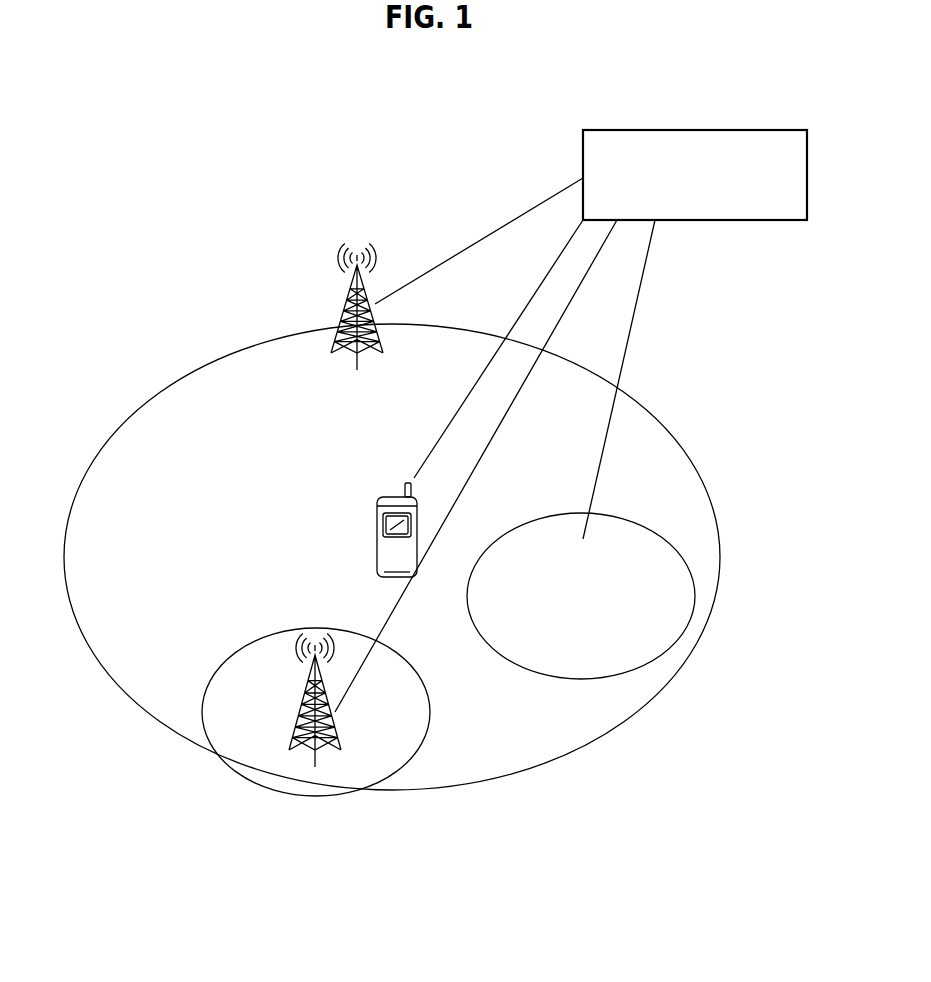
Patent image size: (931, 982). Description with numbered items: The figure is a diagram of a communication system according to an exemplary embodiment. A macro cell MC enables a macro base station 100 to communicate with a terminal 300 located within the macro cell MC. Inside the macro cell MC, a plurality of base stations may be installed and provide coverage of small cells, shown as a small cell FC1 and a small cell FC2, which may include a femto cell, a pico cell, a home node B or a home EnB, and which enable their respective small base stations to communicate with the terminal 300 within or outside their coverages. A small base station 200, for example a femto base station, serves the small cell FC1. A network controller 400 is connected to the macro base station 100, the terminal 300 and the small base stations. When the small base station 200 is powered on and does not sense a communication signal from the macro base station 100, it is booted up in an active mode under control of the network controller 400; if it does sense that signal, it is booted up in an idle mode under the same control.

The macro base station 100 is at (351, 303).
The small base station 200 is at (306, 702).
The terminal 300 is at (377, 528).
The network controller 400 is at (694, 130).
The macro cell MC is at (184, 372).
The small cell FC1 is at (316, 797).
The small cell FC2 is at (655, 533).